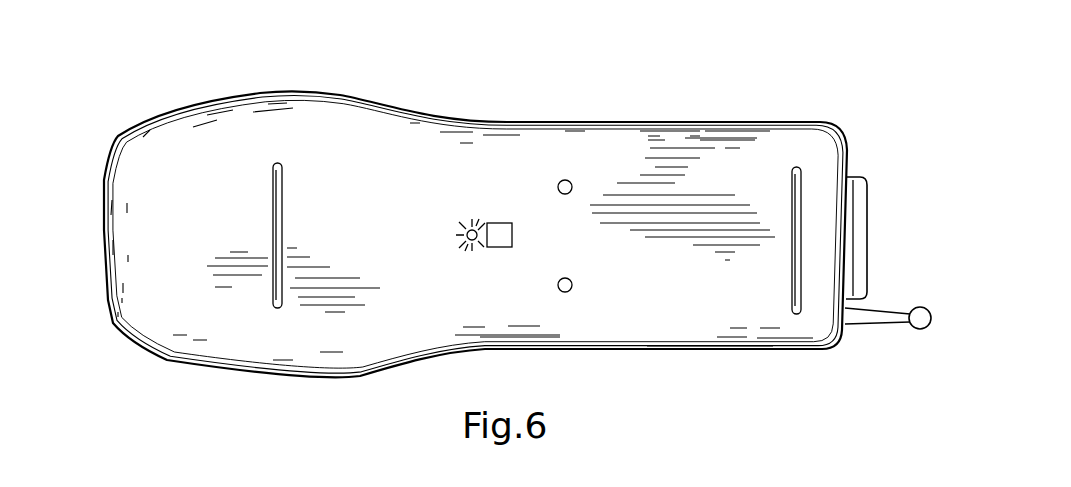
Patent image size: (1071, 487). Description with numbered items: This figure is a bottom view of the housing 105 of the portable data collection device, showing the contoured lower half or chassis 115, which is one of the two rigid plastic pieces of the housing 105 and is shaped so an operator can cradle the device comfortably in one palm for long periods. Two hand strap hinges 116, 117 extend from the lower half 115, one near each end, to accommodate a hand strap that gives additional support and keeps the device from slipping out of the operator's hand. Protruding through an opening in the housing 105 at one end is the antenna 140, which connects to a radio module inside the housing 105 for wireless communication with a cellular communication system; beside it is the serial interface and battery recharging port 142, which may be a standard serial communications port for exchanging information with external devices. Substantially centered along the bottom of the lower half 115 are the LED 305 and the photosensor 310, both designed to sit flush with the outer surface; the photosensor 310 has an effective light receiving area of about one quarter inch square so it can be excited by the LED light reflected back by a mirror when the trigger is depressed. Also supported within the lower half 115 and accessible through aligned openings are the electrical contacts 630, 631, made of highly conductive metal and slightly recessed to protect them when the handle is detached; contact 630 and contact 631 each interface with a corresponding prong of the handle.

The housing 105 is at (90, 150).
The lower half or chassis 115 is at (784, 142).
The hand strap hinge 116 is at (281, 197).
The hand strap hinge 117 is at (797, 187).
The serial interface and battery recharging port 142 is at (863, 230).
The antenna 140 is at (892, 326).
The LED 305 is at (470, 225).
The photosensor 310 is at (500, 222).
The electrical contact 630 is at (562, 180).
The electrical contact 631 is at (559, 280).